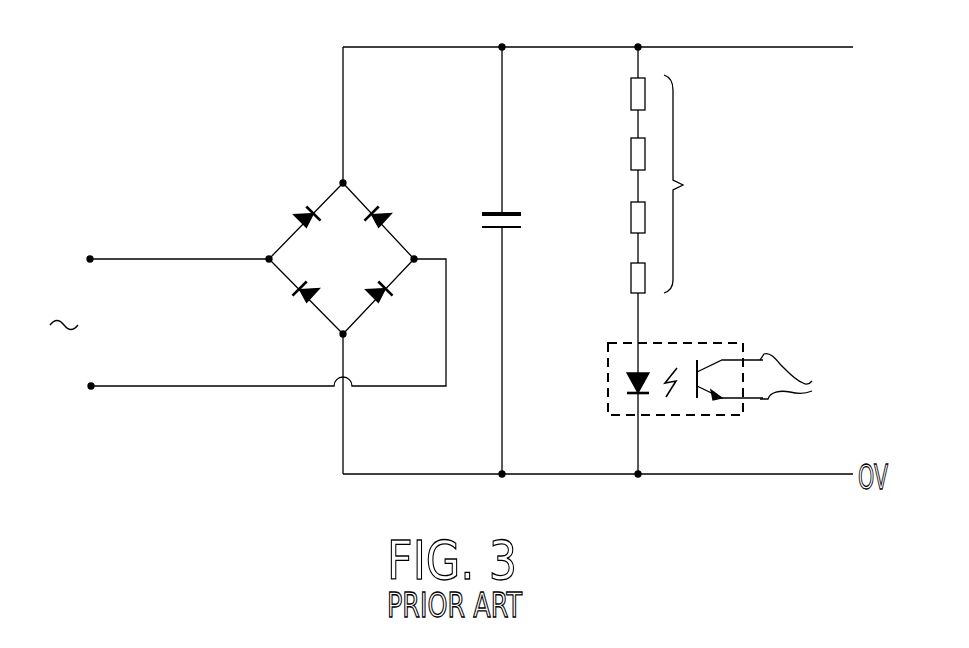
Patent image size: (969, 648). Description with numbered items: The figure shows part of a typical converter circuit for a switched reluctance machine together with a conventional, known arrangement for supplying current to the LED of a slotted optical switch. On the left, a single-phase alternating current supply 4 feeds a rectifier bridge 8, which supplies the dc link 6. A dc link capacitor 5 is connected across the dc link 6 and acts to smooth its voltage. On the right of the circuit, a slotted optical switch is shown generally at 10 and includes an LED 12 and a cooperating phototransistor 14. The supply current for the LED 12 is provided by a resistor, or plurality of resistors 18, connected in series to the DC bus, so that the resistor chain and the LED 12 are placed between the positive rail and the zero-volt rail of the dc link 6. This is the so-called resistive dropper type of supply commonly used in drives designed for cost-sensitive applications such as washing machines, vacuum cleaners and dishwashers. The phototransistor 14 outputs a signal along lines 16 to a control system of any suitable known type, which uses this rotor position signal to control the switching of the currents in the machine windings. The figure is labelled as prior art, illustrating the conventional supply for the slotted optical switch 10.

The single-phase alternating current supply 4 is at (102, 349).
The dc link capacitor 5 is at (510, 212).
The dc link 6 is at (333, 53).
The rectifier bridge 8 is at (283, 248).
The slotted optical switch 10 is at (684, 380).
The LED 12 is at (612, 363).
The phototransistor 14 is at (720, 360).
The lines 16 is at (801, 379).
The resistors 18 is at (683, 185).